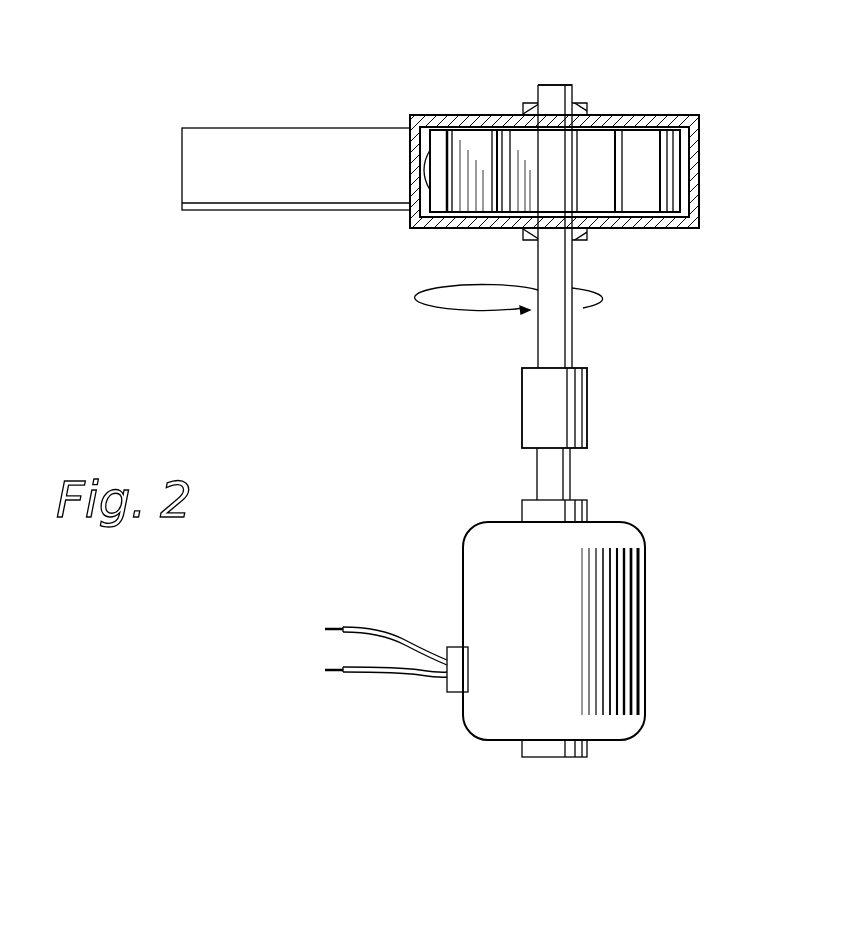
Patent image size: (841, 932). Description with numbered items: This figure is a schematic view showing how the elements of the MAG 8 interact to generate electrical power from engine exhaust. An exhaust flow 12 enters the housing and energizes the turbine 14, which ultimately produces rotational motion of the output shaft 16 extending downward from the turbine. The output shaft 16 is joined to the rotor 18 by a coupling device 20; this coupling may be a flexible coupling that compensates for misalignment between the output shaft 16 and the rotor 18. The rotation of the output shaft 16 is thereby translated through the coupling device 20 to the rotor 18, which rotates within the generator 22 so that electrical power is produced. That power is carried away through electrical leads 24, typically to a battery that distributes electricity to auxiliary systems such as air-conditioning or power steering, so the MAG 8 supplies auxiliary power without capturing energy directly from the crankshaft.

The MAG 8 is at (724, 163).
The exhaust flow 12 is at (65, 170).
The turbine 14 is at (638, 150).
The output shaft 16 is at (572, 335).
The rotor 18 is at (570, 475).
The coupling device 20 is at (587, 410).
The generator 22 is at (645, 625).
The electrical leads 24 is at (362, 625).